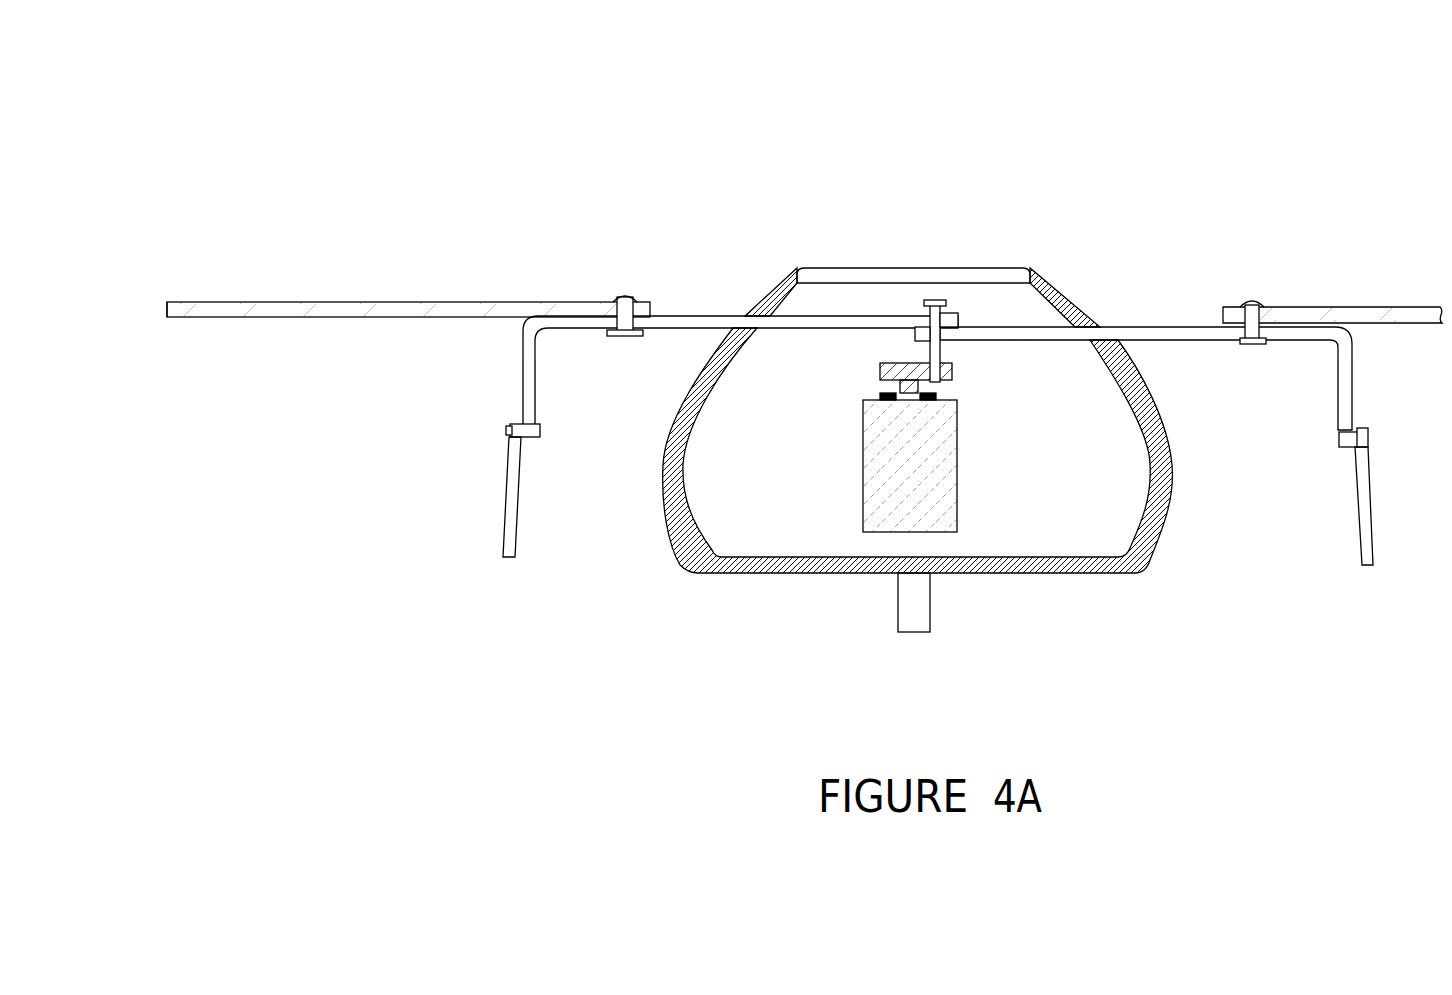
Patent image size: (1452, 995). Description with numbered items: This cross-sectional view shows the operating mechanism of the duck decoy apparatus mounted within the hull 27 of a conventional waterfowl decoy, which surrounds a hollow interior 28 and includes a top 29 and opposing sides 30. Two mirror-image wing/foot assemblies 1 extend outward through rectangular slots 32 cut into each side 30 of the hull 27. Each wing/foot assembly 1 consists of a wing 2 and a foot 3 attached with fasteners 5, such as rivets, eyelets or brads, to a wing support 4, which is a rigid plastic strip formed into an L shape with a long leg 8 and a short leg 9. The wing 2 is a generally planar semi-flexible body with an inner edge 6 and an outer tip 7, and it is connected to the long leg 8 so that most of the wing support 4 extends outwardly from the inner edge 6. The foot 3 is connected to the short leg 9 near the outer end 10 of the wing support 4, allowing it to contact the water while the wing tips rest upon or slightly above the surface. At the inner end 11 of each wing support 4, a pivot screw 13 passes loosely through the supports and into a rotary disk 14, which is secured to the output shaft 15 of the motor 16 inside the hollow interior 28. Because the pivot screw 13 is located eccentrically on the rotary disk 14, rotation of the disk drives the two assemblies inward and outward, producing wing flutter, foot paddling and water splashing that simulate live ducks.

The wing/foot assembly 1 is at (513, 287).
The wing 2 is at (349, 302).
The foot 3 is at (505, 497).
The wing support 4 is at (718, 312).
The fasteners 5 is at (622, 297).
The inner edge 6 is at (655, 302).
The outer tip 7 is at (167, 313).
The long leg 8 is at (830, 316).
The short leg 9 is at (522, 371).
The outer end 10 is at (535, 432).
The inner end 11 is at (905, 327).
The pivot screw 13 is at (928, 300).
The rotary disk 14 is at (880, 372).
The output shaft 15 is at (870, 396).
The motor 16 is at (880, 456).
The hull 27 is at (1168, 545).
The hollow interior 28 is at (1025, 513).
The top 29 is at (1040, 268).
The sides 30 is at (643, 488).
The rectangular slot 32 is at (745, 334).